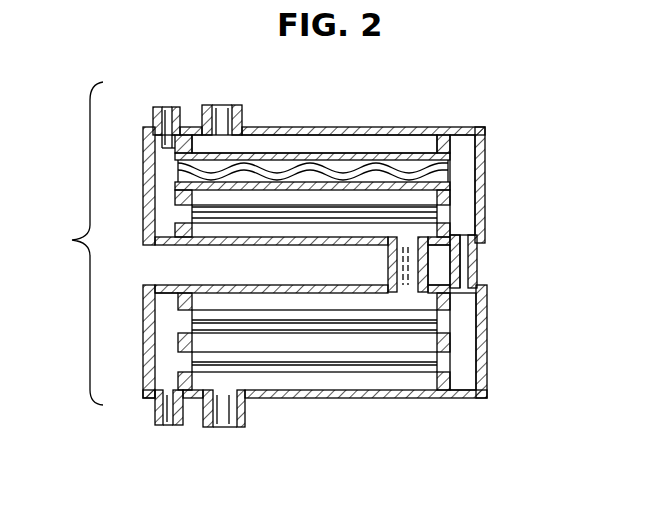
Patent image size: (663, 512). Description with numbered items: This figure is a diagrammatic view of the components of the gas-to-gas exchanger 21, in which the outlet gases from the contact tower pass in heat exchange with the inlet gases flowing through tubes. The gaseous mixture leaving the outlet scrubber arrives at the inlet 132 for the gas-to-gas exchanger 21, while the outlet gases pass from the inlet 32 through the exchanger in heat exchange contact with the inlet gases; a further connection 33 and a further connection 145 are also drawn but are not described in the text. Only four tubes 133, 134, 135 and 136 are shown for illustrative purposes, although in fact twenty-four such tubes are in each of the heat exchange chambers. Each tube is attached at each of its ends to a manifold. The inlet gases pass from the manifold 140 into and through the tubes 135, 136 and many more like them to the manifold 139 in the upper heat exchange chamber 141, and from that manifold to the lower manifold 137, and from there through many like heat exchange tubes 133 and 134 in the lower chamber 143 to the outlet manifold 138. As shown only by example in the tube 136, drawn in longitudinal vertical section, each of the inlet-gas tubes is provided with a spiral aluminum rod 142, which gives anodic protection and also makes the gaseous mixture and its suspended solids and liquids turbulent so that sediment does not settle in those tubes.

The gas-to-gas exchanger 21 is at (66, 243).
The inlet 32 is at (168, 123).
The outlet conduit 33 is at (167, 428).
The inlet 132 is at (228, 428).
The heat exchange tube 133 is at (445, 358).
The heat exchange tube 134 is at (445, 315).
The heat exchange tube 135 is at (453, 212).
The heat exchange tube 136 is at (446, 170).
The lower manifold 137 is at (465, 378).
The outlet manifold 138 is at (166, 303).
The manifold 139 is at (458, 183).
The manifold 140 is at (155, 185).
The heat exchange chamber 141 is at (316, 115).
The spiral aluminum rod 142 is at (348, 170).
The chamber 143 is at (367, 392).
The inlet conduit 145 is at (252, 84).